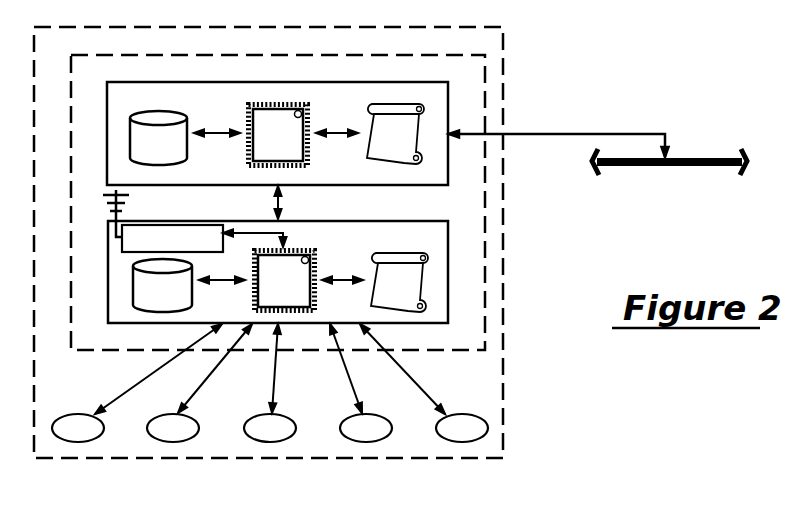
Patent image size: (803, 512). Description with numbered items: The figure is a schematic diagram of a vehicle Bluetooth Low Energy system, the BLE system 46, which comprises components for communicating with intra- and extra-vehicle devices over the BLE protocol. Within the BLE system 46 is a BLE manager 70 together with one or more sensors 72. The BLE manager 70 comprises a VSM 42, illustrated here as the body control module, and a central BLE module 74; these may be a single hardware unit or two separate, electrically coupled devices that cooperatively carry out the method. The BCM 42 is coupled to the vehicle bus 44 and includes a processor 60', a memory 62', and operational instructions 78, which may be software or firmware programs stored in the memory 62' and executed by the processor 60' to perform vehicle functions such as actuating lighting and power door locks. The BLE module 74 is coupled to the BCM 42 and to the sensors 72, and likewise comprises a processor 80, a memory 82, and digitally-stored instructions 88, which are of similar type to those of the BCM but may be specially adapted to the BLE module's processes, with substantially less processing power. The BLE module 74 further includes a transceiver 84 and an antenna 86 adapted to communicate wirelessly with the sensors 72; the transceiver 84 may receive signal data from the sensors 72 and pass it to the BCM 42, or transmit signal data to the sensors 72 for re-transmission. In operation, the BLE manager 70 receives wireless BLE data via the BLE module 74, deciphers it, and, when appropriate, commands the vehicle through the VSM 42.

The BLE system 46 is at (505, 53).
The BLE manager 70 is at (407, 55).
The VSM 42 is at (334, 82).
The central BLE module 74 is at (334, 221).
The memory 62' is at (158, 138).
The processor 60' is at (278, 135).
The operational instructions 78 is at (382, 145).
The bus 44 is at (706, 150).
The antenna 86 is at (120, 216).
The transceiver 84 is at (161, 249).
The memory 82 is at (152, 297).
The processor 80 is at (274, 297).
The digitally-stored instructions 88 is at (387, 298).
The sensors 72 is at (67, 438).